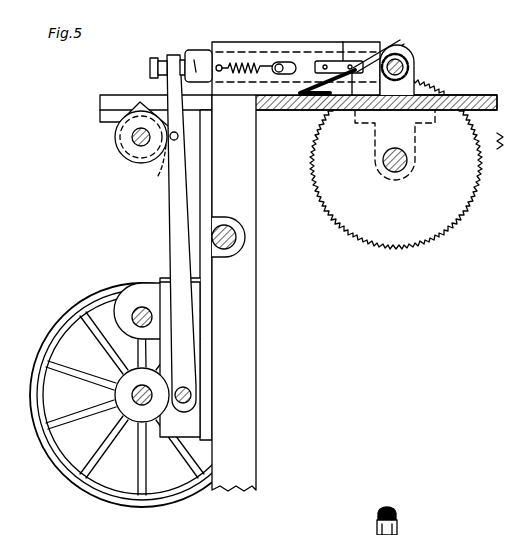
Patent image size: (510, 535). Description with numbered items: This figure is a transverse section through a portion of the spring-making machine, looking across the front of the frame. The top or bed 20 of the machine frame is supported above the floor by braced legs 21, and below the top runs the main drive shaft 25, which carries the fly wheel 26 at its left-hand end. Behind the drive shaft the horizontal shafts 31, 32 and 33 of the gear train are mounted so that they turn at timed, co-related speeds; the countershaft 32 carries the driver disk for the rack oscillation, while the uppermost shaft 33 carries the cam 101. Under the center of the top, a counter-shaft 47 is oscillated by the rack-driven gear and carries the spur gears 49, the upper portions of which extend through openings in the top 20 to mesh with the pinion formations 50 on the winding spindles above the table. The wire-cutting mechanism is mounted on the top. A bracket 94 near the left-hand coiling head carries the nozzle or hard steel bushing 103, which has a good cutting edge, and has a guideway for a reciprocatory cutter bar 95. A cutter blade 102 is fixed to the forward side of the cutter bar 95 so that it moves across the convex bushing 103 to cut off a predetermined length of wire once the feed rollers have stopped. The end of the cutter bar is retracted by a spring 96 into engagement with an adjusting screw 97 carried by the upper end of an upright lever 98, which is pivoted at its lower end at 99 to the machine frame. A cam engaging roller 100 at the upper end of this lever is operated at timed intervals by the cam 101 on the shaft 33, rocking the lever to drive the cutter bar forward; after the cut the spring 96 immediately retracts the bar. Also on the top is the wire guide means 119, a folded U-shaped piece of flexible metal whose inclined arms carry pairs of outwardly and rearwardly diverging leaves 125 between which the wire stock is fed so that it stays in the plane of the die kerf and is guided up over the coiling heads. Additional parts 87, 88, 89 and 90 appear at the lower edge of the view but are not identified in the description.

The top or bed of the machine frame 20 is at (470, 95).
The legs 21 is at (256, 418).
The main drive shaft 25 is at (140, 406).
The fly wheel 26 is at (48, 342).
The horizontal shaft 31 is at (142, 306).
The countershaft 32 is at (240, 240).
The uppermost shaft 33 is at (132, 140).
The counter-shaft 47 is at (405, 170).
The spur gears 49 is at (408, 240).
The pinion formations 50 is at (416, 70).
The base member 87 is at (205, 528).
The base member 88 is at (355, 528).
The base member 89 is at (418, 534).
The knob 90 is at (392, 512).
The bracket 94 is at (302, 42).
The reciprocatory cutter bar 95 is at (198, 54).
The spring 96 is at (248, 64).
The adjusting screw 97 is at (154, 58).
The upright lever 98 is at (184, 222).
The pivot 99 is at (188, 390).
The cam engaging roller 100 is at (160, 170).
The cam 101 is at (126, 124).
The cutter blade 102 is at (347, 60).
The nozzle or hard steel bushing 103 is at (380, 50).
The wire guide means 119 is at (352, 112).
The leaves 125 is at (403, 56).